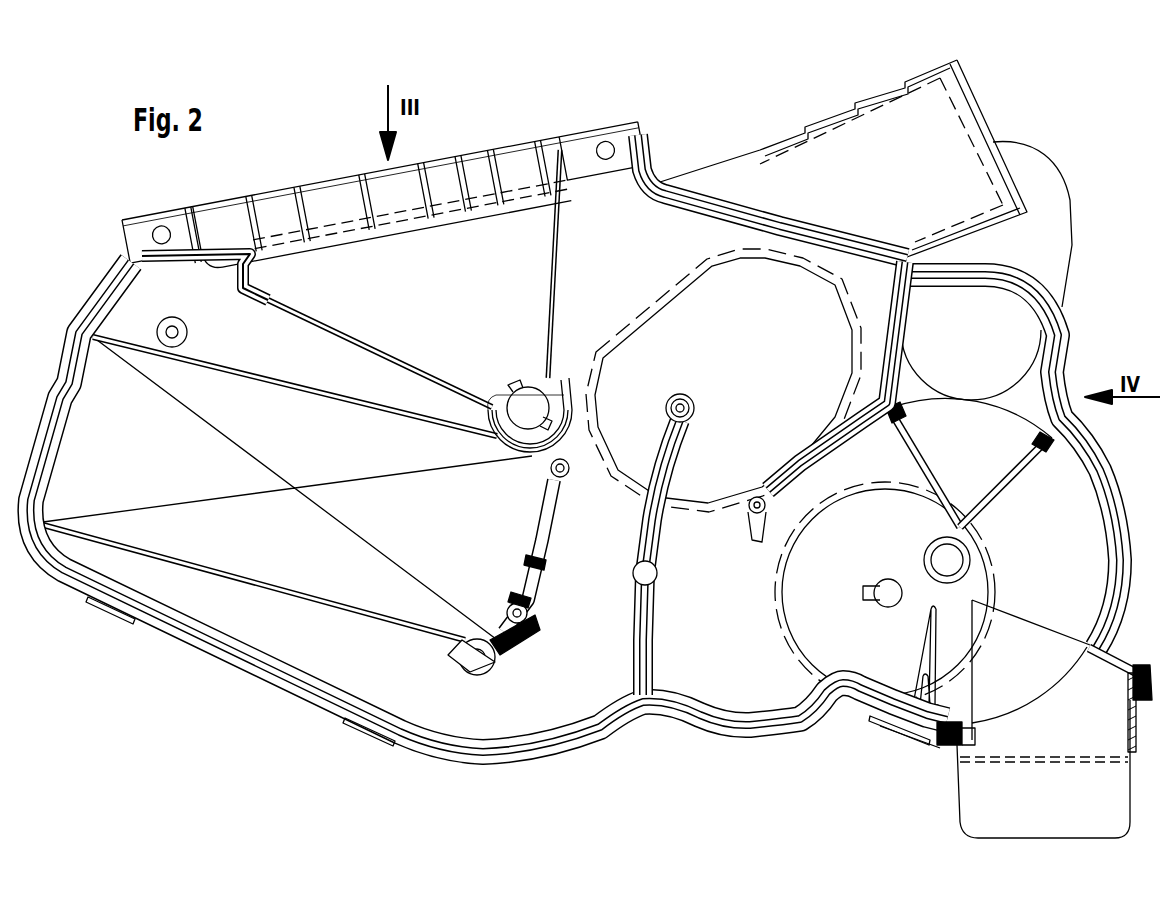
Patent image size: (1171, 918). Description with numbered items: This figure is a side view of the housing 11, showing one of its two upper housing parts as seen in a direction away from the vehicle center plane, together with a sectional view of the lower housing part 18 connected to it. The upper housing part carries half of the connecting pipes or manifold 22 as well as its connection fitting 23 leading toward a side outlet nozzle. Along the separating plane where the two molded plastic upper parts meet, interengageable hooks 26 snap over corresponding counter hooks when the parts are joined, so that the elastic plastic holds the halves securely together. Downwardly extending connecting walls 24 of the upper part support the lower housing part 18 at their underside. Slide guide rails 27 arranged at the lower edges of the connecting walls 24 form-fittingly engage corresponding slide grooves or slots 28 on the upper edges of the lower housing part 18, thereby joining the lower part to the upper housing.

The housing 11 is at (627, 727).
The lower housing part 18 is at (1088, 762).
The connecting pipes or manifold 22 is at (947, 121).
The connection fittings 23 is at (1050, 173).
The connecting walls 24 is at (1108, 657).
The interengageable hooks 26 is at (110, 612).
The slide guide rails 27 is at (1127, 672).
The slide grooves or slots 28 is at (946, 748).